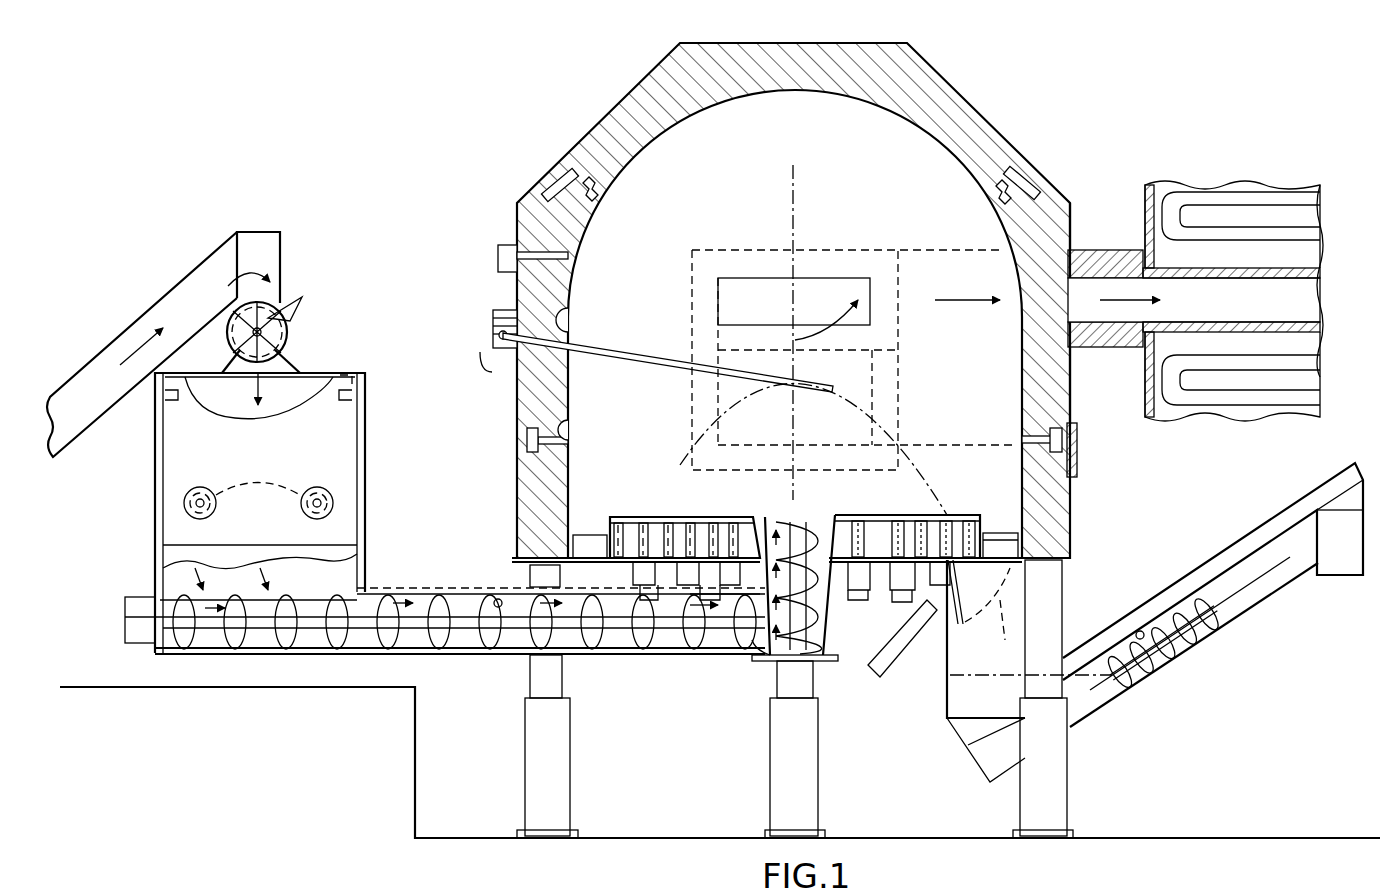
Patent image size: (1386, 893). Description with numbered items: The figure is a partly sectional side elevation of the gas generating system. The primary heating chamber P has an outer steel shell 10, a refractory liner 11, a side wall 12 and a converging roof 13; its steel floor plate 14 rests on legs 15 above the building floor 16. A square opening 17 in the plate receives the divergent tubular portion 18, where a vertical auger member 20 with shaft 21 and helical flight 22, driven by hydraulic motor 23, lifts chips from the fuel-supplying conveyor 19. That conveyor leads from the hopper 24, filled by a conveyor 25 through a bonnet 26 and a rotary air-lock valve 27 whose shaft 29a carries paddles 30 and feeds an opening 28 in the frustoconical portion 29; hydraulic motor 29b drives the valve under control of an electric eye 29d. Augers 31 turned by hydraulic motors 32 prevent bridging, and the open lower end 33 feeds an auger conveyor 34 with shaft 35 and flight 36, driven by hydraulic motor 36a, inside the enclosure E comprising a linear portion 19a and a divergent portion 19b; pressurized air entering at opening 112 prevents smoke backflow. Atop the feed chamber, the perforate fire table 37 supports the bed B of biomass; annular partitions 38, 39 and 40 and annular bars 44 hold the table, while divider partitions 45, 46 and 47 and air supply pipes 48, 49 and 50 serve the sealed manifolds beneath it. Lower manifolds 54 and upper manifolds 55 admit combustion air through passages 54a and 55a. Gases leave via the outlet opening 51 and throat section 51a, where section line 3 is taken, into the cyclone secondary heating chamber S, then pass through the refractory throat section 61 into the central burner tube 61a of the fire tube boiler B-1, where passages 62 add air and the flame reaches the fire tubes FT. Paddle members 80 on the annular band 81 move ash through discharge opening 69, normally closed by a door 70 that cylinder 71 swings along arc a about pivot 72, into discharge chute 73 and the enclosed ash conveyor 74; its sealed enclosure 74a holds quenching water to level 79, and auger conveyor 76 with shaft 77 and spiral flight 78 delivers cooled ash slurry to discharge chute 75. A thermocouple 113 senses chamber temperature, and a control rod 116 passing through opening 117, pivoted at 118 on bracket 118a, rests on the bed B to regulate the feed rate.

The outer shell 10 is at (1080, 455).
The liner 11 is at (1068, 408).
The side wall 12 is at (1068, 205).
The roof 13 is at (962, 96).
The floor plate 14 is at (1070, 537).
The legs 15 is at (1046, 623).
The floor 16 is at (1100, 836).
The square opening 17 is at (830, 518).
The tubular portion 18 is at (840, 587).
The fuel-supplying conveyor 19 is at (600, 660).
The linear portion 19a is at (455, 657).
The divergent portion 19b is at (690, 657).
The auger member 20 is at (815, 642).
The shaft 21 is at (768, 650).
The helical flight 22 is at (826, 660).
The hydraulic motor 23 is at (782, 678).
The hopper 24 is at (368, 446).
The conveyor 25 is at (122, 333).
The bonnet 26 is at (273, 247).
The rotary air-lock valve device 27 is at (303, 340).
The opening 28 is at (297, 368).
The frustoconical portion 29 is at (236, 358).
The axial shaft 29a is at (283, 300).
The rotary hydraulic motor 29b is at (259, 395).
The electric eye 29d is at (352, 376).
The radial paddles 30 is at (300, 312).
The augers 31 is at (258, 479).
The hydraulic motors 32 is at (300, 512).
The open lower end 33 is at (345, 595).
The auger conveyor 34 is at (452, 600).
The shaft 35 is at (382, 650).
The helical flight 36 is at (335, 648).
The hydraulic motor 36a is at (138, 642).
The fire table 37 is at (956, 515).
The annular partition 38 is at (745, 515).
The annular partition 39 is at (693, 517).
The annular partition 40 is at (622, 517).
The annular bars 44 is at (895, 515).
The divider partition 45 is at (776, 525).
The divider partition 46 is at (725, 517).
The divider partition 47 is at (660, 517).
The air supply pipe 48 is at (733, 601).
The air supply pipe 49 is at (685, 601).
The air supply pipe 50 is at (628, 577).
The outlet opening 51 is at (820, 285).
The tubular section 51a is at (762, 255).
The lower manifolds 54 is at (527, 441).
The passages 54a is at (566, 430).
The upper manifolds 55 is at (555, 175).
The passages 55a is at (600, 190).
The throat section 61 is at (1082, 338).
The central burner tube 61a is at (1305, 268).
The passages 62 is at (1112, 250).
The ash discharge opening 69 is at (1055, 584).
The door 70 is at (963, 584).
The cylinder 71 is at (905, 650).
The pivot 72 is at (912, 580).
The discharge chute 73 is at (947, 700).
The ash conveyor 74 is at (1255, 520).
The conveyor enclosure 74a is at (1245, 598).
The discharge chute 75 is at (1335, 562).
The auger conveyor 76 is at (1151, 615).
The shaft 77 is at (1192, 645).
The spiral conveyor flight 78 is at (1138, 633).
The liquid body 79 is at (1000, 675).
The paddle members 80 is at (575, 540).
The annular band 81 is at (585, 533).
The opening 112 is at (498, 598).
The thermocouple 113 is at (496, 250).
The control rod 116 is at (629, 355).
The opening 117 is at (572, 311).
The pivot post 118 is at (492, 330).
The bracket 118a is at (492, 352).
The section line 3- 3 is at (752, 174).
The bed B is at (885, 430).
The fire tube boiler B-1 is at (1207, 178).
The enclosure E is at (476, 661).
The fire tubes FT is at (1282, 198).
The primary heating chamber P is at (1012, 118).
The cyclone secondary heating chamber S is at (967, 248).
The arc a is at (987, 605).